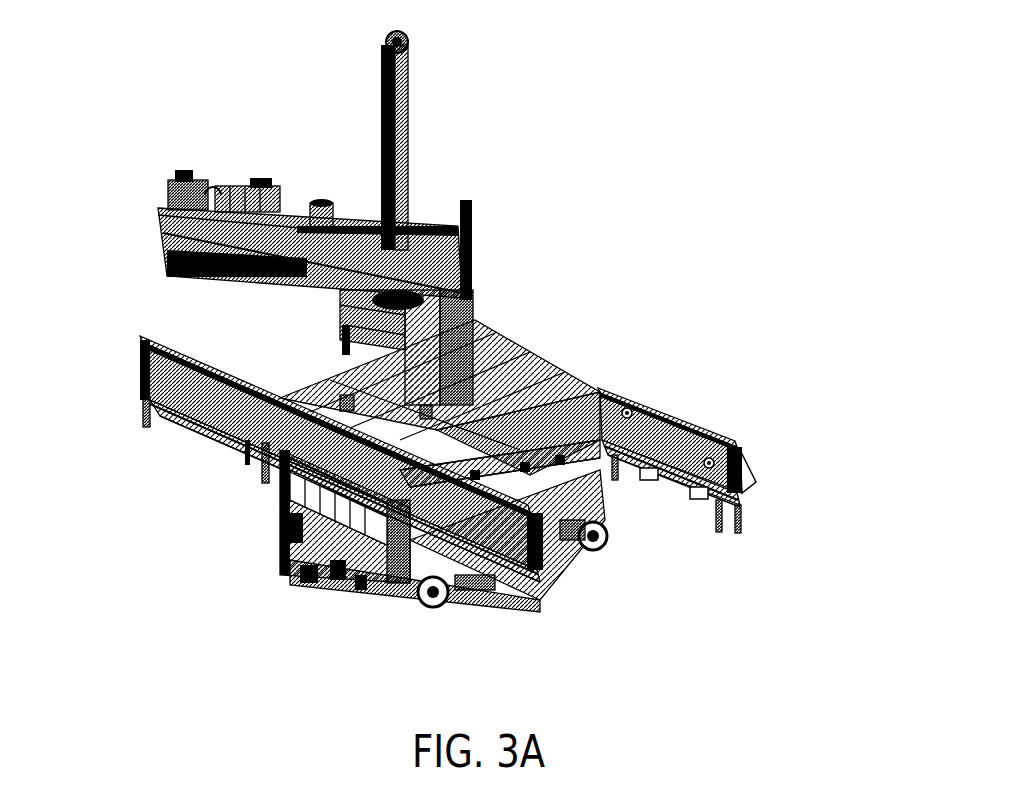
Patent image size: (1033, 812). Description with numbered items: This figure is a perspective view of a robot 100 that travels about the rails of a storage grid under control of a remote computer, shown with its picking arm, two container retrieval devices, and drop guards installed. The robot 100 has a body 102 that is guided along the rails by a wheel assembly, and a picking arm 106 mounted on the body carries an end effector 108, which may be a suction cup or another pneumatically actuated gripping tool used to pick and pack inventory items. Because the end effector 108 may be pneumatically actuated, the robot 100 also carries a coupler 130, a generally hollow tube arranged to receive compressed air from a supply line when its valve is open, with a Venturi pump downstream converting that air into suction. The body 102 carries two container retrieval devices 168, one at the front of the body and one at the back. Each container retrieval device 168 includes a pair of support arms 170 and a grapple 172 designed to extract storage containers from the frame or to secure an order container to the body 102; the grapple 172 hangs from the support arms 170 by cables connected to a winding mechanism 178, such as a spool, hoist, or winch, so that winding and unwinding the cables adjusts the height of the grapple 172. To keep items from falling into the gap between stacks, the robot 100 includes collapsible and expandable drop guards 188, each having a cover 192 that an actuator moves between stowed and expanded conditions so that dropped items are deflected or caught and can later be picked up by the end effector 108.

The robot 100 is at (126, 104).
The body 102 is at (467, 415).
The picking arm 106 is at (273, 230).
The end effector 108 is at (413, 302).
The coupler 130 is at (333, 580).
The container retrieval device 168 is at (158, 303).
The support arms 170 is at (643, 402).
The grapple 172 is at (678, 493).
The winding mechanism 178 is at (708, 457).
The drop guard 188 is at (190, 398).
The cover 192 is at (315, 447).